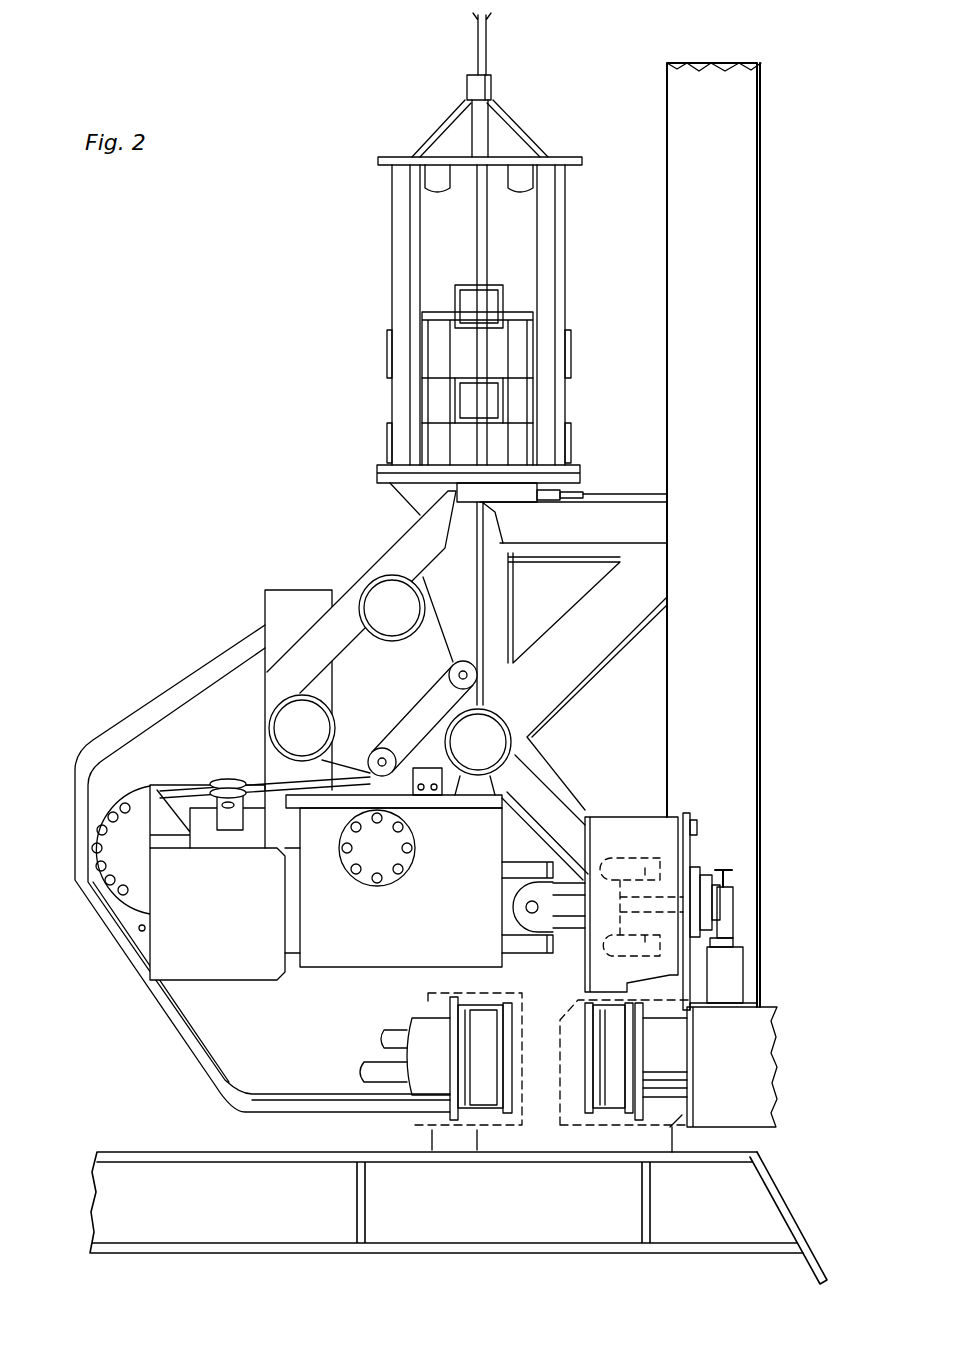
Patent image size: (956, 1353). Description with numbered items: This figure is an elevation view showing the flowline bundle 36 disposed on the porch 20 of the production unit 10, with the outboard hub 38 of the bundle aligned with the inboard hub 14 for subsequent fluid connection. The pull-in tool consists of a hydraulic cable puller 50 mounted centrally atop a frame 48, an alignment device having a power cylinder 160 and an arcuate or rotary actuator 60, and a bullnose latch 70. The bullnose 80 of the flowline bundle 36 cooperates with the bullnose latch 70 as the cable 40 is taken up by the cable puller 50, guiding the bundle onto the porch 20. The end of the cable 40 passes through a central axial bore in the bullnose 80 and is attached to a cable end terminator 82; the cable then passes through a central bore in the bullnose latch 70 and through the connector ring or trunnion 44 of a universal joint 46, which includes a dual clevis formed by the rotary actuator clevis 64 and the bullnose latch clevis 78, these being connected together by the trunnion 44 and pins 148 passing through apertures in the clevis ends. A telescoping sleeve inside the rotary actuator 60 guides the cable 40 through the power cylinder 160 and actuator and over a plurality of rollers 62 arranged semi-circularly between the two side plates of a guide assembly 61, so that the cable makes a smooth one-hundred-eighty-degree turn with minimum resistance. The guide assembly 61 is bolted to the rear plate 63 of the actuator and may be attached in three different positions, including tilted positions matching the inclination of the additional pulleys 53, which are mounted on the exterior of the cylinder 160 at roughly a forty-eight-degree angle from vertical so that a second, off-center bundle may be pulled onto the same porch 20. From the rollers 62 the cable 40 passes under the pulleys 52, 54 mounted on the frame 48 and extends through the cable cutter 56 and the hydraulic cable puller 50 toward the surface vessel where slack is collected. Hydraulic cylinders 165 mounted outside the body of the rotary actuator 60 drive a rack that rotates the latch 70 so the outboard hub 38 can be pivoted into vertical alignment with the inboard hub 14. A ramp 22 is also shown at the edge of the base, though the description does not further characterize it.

The production unit 10 is at (228, 1210).
The inboard hub 14 is at (503, 1115).
The porch 20 is at (417, 1152).
The ramp 22 is at (782, 1200).
The flowline bundle 36 is at (748, 872).
The outboard hub 38 is at (618, 1115).
The cable 40 is at (478, 45).
The connector ring (trunnion) 44 is at (525, 925).
The universal joint 46 is at (523, 858).
The frame 48 is at (368, 678).
The hydraulic cable puller 50 is at (385, 228).
The pulley 52 is at (378, 750).
The additional pulley 53 is at (228, 782).
The pulley 54 is at (452, 684).
The cable cutter 56 is at (528, 505).
The arcuate (rotary) actuator 60 is at (400, 931).
The guide assembly 61 is at (93, 890).
The rollers 62 is at (95, 850).
The rear plate 63 is at (138, 929).
The rotary actuator clevis 64 is at (515, 868).
The bullnose latch 70 is at (618, 815).
The bullnose latch clevis 78 is at (575, 917).
The bullnose 80 is at (695, 867).
The cable end terminator 82 is at (712, 878).
The pins 148 is at (522, 897).
The power cylinder 160 is at (240, 934).
The hydraulic cylinders 165 is at (355, 858).